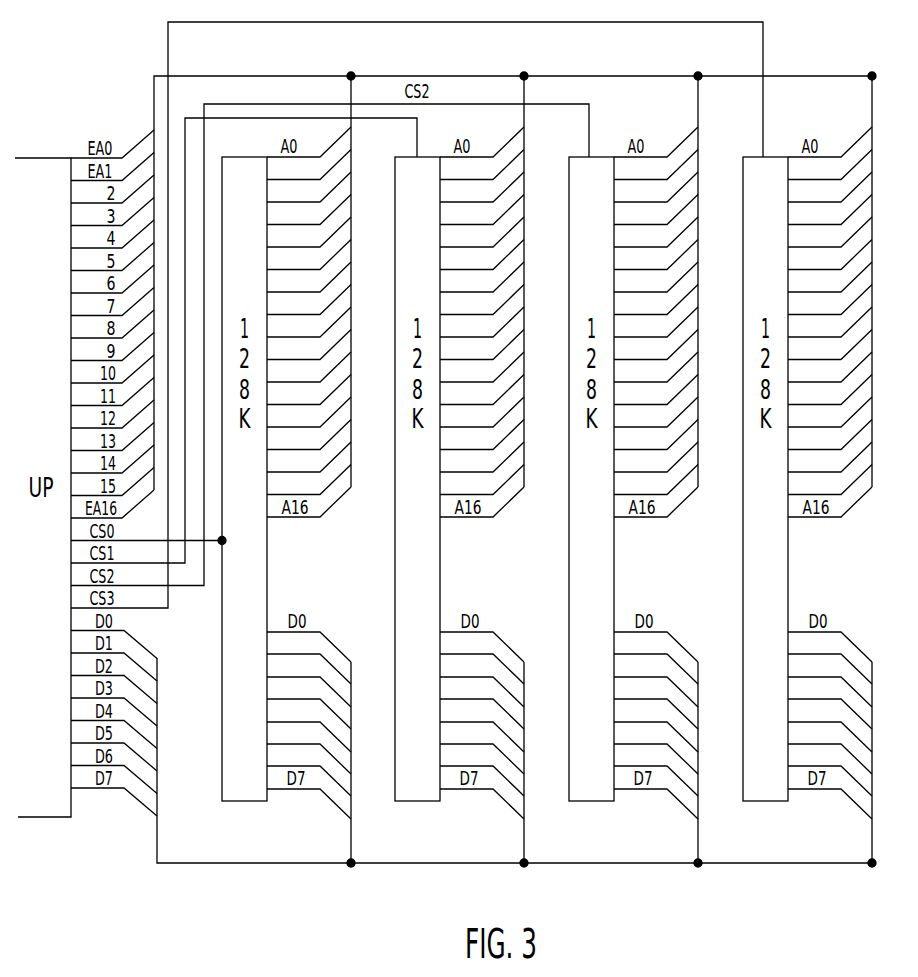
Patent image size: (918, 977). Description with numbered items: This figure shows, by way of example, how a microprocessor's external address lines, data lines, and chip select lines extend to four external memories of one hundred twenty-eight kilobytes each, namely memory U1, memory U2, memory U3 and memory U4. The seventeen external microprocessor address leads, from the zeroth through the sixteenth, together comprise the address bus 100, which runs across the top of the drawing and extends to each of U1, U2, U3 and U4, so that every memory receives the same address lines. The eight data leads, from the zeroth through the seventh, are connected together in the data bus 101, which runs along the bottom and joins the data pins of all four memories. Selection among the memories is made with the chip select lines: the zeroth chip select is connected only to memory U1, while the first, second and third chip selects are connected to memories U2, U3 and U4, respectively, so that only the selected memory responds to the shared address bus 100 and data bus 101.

The address bus 100 is at (154, 76).
The data bus 101 is at (176, 863).
The 128K external memory U1 is at (288, 469).
The 128K external memory U2 is at (461, 469).
The 128K external memory U3 is at (635, 469).
The 128K external memory U4 is at (809, 469).